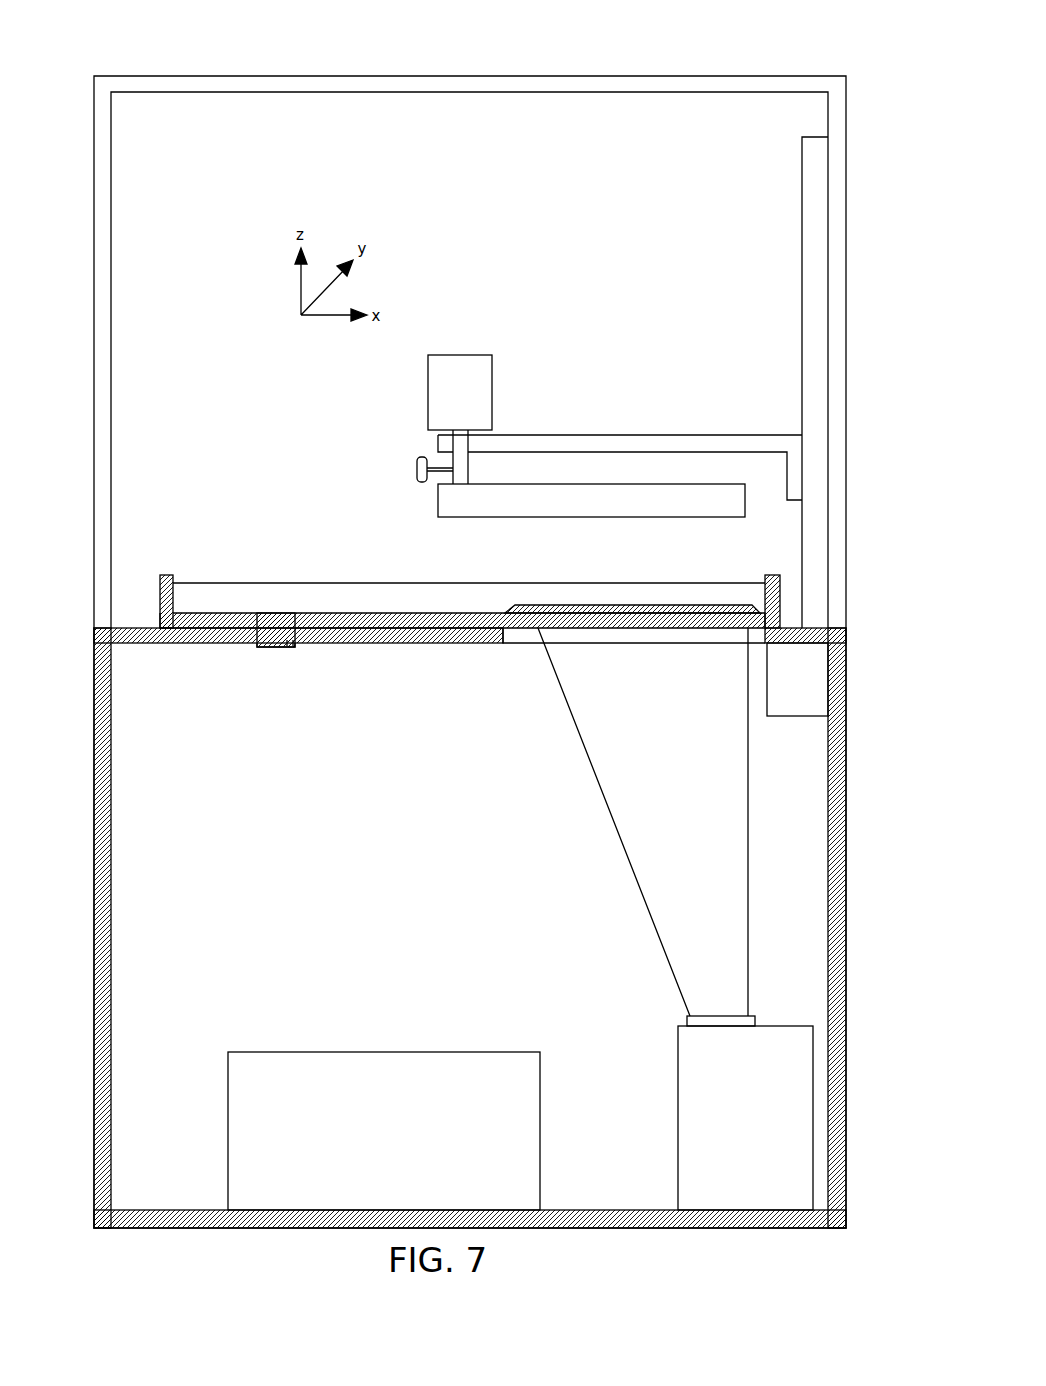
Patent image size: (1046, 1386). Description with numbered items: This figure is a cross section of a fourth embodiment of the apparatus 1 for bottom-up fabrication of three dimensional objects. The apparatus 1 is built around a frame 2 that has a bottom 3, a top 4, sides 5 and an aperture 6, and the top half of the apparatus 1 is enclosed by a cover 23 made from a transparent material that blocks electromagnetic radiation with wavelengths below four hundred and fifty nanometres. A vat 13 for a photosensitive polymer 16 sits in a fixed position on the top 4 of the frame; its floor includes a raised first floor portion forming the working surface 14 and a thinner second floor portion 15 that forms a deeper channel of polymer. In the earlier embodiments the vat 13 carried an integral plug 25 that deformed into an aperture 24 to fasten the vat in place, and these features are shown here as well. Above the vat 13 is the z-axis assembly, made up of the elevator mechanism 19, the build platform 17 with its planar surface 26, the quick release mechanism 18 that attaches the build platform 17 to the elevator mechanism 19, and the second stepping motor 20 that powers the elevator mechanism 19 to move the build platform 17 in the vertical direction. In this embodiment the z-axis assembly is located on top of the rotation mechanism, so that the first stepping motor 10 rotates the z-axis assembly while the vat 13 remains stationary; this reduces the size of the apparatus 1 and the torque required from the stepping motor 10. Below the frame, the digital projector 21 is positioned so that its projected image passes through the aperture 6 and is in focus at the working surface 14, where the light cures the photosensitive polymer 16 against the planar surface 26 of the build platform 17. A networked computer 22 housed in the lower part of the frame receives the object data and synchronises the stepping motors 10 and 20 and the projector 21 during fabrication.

The apparatus 1 is at (660, 66).
The frame 2 is at (846, 747).
The bottom 3 is at (194, 1210).
The top 4 is at (263, 673).
The sides 5 is at (846, 885).
The aperture 6 is at (520, 643).
The stepping motor 10 is at (440, 352).
The vat 13 is at (169, 575).
The working surface 14 is at (573, 605).
The second floor portion 15 is at (276, 613).
The photosensitive polymer 16 is at (227, 583).
The build platform 17 is at (435, 507).
The quick release mechanism 18 is at (412, 460).
The elevator mechanism 19 is at (697, 434).
The stepping motor 20 is at (787, 716).
The digital projector 21 is at (675, 1068).
The networked computer 22 is at (380, 1045).
The cover 23 is at (94, 150).
The aperture 24 is at (293, 640).
The plug 25 is at (287, 645).
The planar surface 26 is at (636, 520).